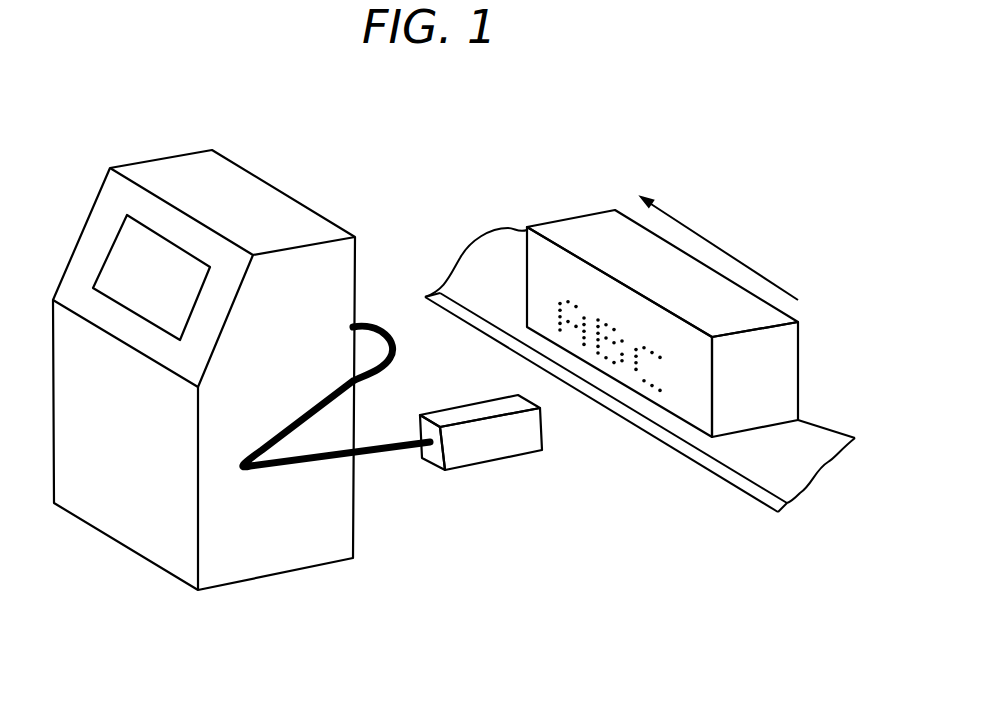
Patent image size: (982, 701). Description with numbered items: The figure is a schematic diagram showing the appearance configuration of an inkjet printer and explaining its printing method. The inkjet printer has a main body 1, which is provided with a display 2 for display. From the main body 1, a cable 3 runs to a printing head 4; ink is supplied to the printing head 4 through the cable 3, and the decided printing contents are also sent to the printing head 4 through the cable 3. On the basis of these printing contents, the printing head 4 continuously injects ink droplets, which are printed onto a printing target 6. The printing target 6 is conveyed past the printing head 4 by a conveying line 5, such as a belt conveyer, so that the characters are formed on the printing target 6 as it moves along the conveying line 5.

The main body 1 is at (250, 193).
The display 2 is at (133, 243).
The cable 3 is at (317, 470).
The printing head 4 is at (492, 437).
The conveying line 5 is at (735, 455).
The printing target 6 is at (780, 372).